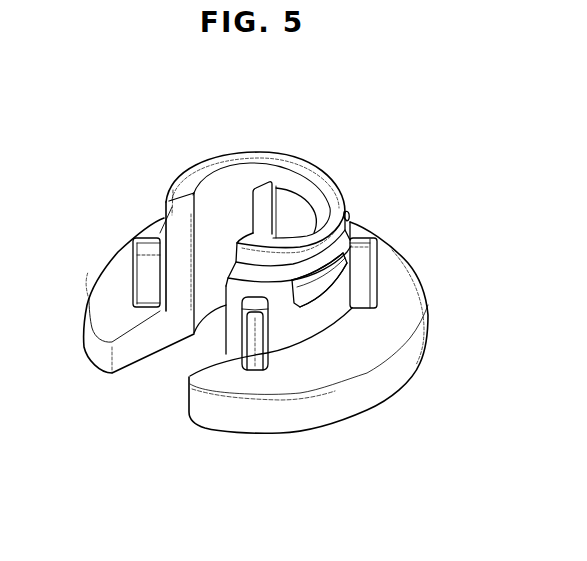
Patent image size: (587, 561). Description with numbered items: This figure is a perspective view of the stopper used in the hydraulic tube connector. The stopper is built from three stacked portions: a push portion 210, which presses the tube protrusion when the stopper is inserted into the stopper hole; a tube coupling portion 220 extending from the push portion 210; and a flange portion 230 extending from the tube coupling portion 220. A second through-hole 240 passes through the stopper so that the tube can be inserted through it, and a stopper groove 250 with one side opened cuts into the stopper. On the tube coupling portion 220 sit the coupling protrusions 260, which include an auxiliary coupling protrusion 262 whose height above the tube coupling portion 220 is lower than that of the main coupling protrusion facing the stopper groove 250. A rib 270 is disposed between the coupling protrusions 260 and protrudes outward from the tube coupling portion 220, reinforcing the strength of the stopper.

The push portion 210 is at (257, 157).
The tube coupling portion 220 is at (350, 215).
The flange portion 230 is at (408, 293).
The second through-hole 240 is at (237, 196).
The stopper groove 250 is at (175, 270).
The coupling protrusion 260 is at (382, 349).
The auxiliary coupling protrusion 262 is at (322, 291).
The rib 270 is at (137, 289).